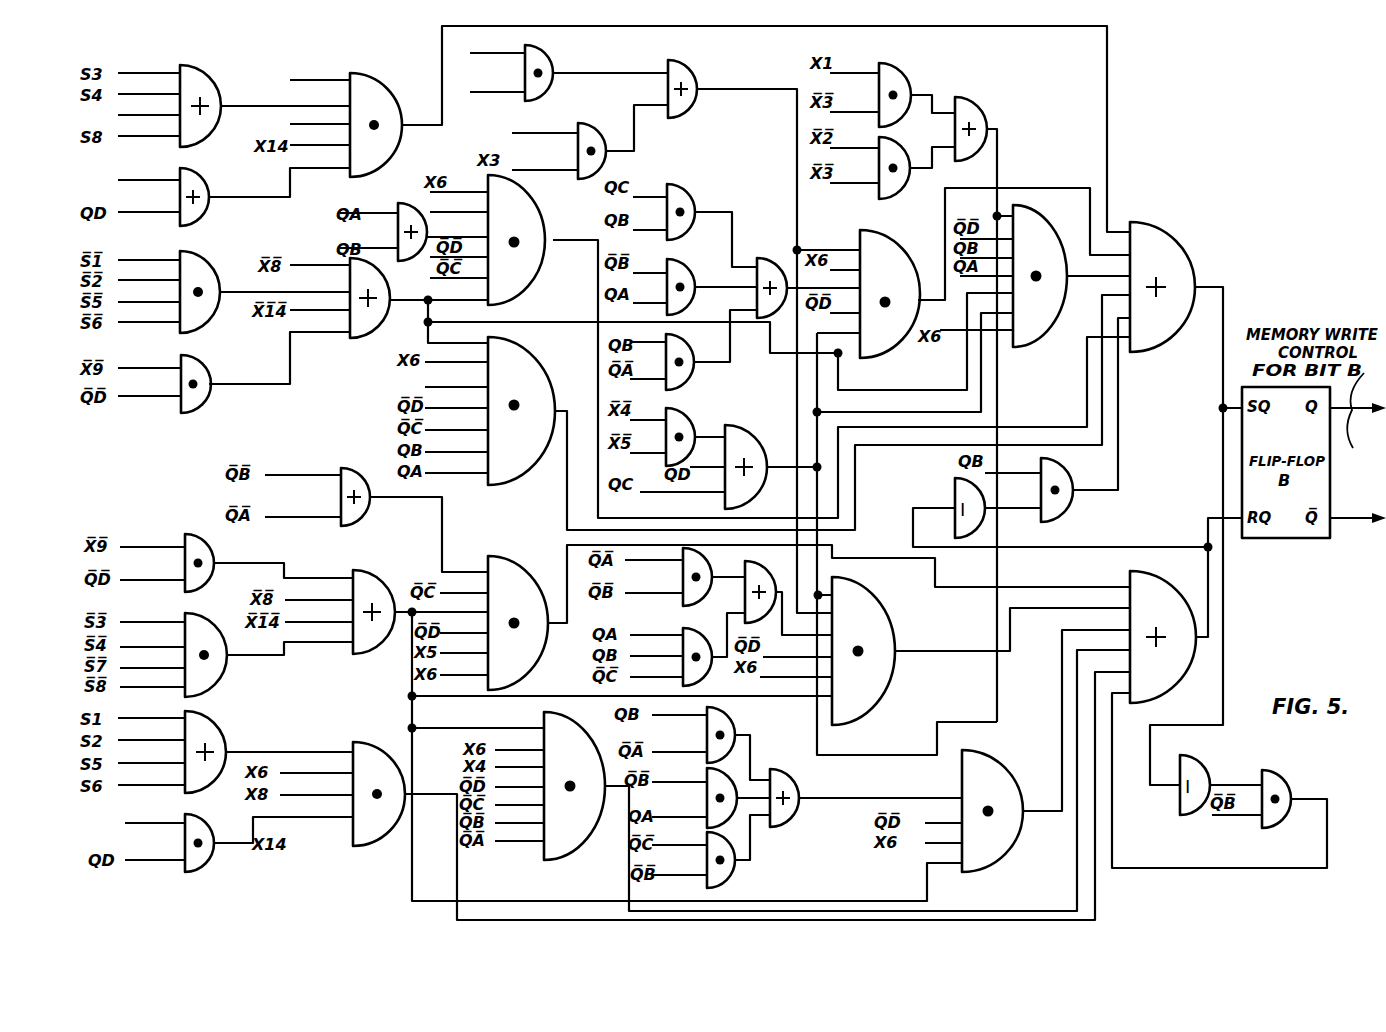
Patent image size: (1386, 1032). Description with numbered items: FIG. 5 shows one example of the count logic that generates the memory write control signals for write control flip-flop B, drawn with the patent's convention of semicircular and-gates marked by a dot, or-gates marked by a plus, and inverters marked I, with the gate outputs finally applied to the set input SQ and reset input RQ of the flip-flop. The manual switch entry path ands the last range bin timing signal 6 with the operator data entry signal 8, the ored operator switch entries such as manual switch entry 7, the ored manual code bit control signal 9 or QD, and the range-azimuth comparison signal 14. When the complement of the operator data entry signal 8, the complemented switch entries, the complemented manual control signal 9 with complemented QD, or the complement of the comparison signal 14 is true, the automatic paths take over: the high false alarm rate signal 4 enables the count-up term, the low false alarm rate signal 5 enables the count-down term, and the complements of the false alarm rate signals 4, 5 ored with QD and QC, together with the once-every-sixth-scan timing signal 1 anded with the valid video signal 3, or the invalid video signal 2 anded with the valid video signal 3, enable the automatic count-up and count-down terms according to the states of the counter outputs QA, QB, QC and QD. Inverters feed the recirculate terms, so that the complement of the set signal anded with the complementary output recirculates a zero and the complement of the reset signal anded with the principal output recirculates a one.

The logic function signal X1 1 is at (488, 42).
The logic function signal X2 2 is at (527, 133).
The logic function signal X3 3 is at (488, 82).
The logic function signal X4 4 is at (455, 202).
The logic function signal X5 5 is at (442, 385).
The logic function signal X6 6 is at (303, 81).
The manual switch entry signal S7 7 is at (130, 116).
The logic function signal X8 8 is at (303, 125).
The logic function signal X9 9 is at (129, 181).
The logic function signal X14 14 is at (138, 824).